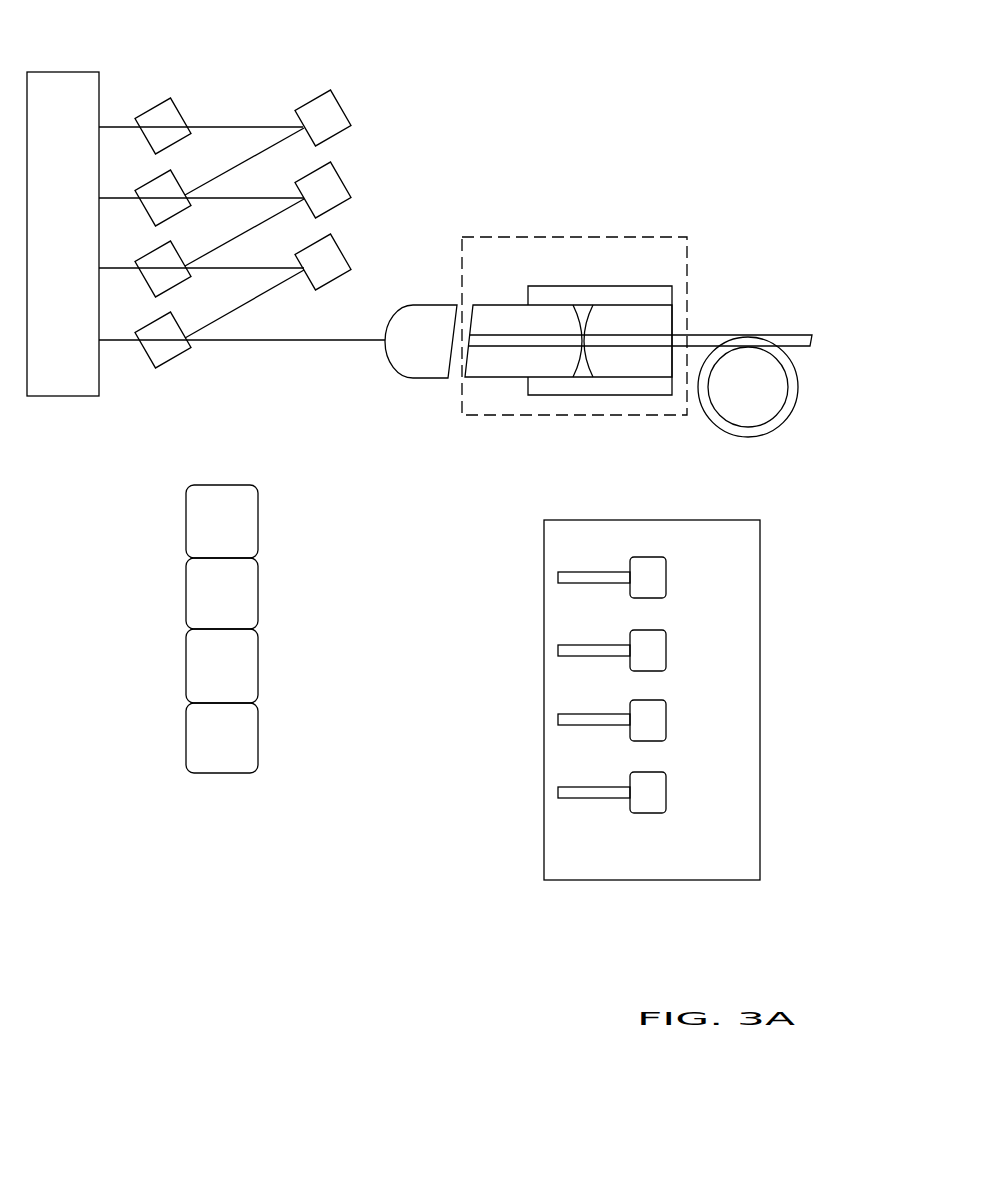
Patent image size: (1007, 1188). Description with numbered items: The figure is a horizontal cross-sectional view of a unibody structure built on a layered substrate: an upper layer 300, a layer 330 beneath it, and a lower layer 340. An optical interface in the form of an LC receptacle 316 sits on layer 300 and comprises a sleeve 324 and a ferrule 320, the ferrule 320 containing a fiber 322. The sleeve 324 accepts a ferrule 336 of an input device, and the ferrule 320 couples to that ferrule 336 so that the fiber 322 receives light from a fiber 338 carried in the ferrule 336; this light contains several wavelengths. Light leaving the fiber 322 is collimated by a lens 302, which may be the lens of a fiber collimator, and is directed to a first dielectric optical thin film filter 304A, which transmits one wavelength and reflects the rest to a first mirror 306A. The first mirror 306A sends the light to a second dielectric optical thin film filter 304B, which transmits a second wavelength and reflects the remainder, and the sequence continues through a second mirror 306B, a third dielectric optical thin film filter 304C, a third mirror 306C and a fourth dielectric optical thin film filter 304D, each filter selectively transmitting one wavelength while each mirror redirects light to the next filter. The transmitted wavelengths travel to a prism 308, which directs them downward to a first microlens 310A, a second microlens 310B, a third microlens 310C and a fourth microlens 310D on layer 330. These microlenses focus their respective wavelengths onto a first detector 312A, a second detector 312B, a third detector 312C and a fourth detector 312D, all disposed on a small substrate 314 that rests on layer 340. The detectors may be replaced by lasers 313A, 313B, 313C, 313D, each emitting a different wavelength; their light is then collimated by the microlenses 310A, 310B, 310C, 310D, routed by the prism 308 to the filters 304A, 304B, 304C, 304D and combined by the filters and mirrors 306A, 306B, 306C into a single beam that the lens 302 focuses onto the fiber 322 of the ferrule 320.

The layer 300 is at (583, 87).
The lens 302 is at (392, 322).
The first dielectric optical thin film filter 304A is at (145, 327).
The second dielectric optical thin film filter 304B is at (145, 256).
The third dielectric optical thin film filter 304C is at (145, 185).
The fourth dielectric optical thin film filter 304D is at (145, 113).
The first mirror 306A is at (343, 250).
The second mirror 306B is at (343, 179).
The third mirror 306C is at (343, 108).
The prism 308 is at (78, 72).
The first microlens 310A is at (260, 738).
The second microlens 310B is at (260, 667).
The third microlens 310C is at (260, 595).
The fourth microlens 310D is at (260, 522).
The first detector 312A is at (653, 809).
The second detector 312B is at (653, 737).
The third detector 312C is at (653, 666).
The fourth detector 312D is at (654, 593).
The laser 313A is at (667, 793).
The laser 313B is at (667, 723).
The laser 313C is at (667, 653).
The laser 313D is at (667, 578).
The small substrate 314 is at (630, 861).
The LC receptacle 316 is at (592, 236).
The ferrule 320 is at (518, 304).
The fiber 322 is at (518, 350).
The sleeve 324 is at (635, 286).
The layer 330 is at (150, 662).
The ferrule 336 is at (638, 330).
The fiber 338 is at (760, 335).
The layer 340 is at (527, 793).